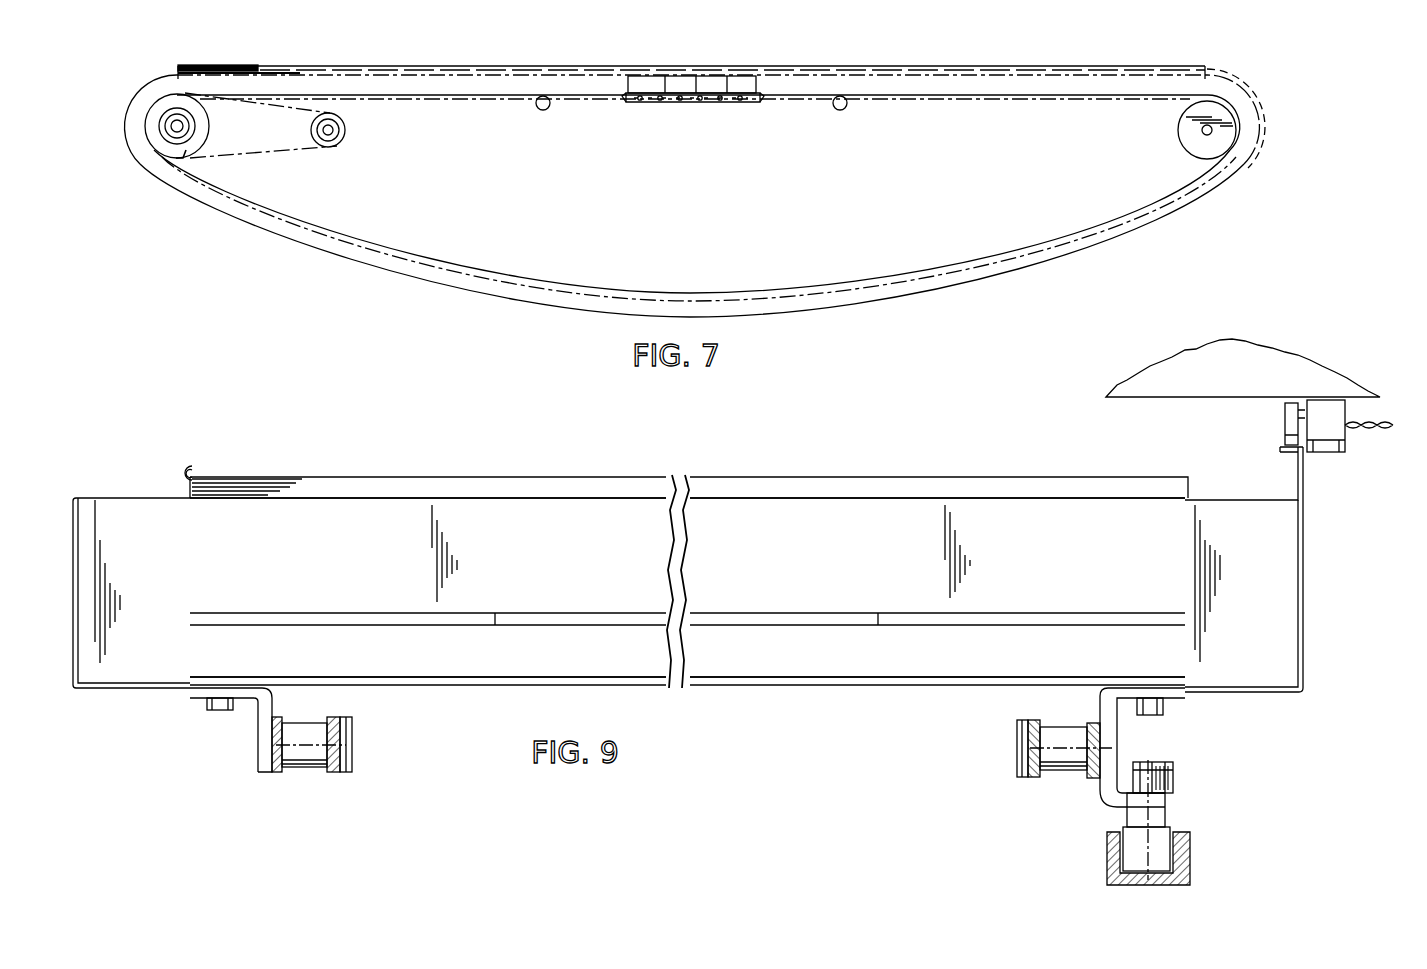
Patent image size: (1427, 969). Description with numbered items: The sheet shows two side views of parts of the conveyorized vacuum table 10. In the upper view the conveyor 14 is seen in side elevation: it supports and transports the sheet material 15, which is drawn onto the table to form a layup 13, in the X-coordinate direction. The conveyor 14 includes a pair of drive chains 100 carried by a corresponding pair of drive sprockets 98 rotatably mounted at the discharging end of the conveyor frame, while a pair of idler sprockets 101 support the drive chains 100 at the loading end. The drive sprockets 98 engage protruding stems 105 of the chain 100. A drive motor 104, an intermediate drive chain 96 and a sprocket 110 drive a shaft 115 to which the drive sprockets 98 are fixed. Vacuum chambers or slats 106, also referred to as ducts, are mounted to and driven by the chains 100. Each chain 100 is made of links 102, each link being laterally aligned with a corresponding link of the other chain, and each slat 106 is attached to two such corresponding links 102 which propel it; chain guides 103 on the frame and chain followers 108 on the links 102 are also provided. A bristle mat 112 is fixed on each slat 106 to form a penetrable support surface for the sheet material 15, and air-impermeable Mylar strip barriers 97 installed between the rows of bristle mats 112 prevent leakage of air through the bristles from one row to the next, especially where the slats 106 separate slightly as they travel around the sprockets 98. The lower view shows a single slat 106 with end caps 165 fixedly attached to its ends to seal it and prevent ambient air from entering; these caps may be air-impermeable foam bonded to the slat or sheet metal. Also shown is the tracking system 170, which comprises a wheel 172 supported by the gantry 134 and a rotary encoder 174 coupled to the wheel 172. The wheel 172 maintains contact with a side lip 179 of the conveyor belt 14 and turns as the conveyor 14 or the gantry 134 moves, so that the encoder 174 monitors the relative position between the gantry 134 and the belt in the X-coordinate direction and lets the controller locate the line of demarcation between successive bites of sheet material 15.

In FIG. 7, the conveyorized vacuum table 10 is at (360, 268).
In FIG. 9, the layup 13 is at (602, 466).
In FIG. 7, the conveyor 14 is at (486, 67).
In FIG. 7, the sheet material 15 is at (588, 68).
In FIG. 9, the sheet material 15 is at (686, 471).
In FIG. 7, the intermediate drive chain 96 is at (268, 148).
In FIG. 9, the Mylar strip barrier 97 is at (1070, 528).
In FIG. 7, the drive sprocket 98 is at (173, 110).
In FIG. 7, the drive chain 100 is at (1010, 95).
In FIG. 7, the idler sprocket 101 is at (1178, 128).
In FIG. 7, the link 102 is at (738, 101).
In FIG. 9, the link 102 is at (258, 750).
In FIG. 9, the chain guide 103 is at (1192, 843).
In FIG. 7, the drive motor 104 is at (338, 140).
In FIG. 9, the protruding stem 105 is at (305, 775).
In FIG. 7, the slat 106 is at (751, 72).
In FIG. 9, the slat 106 is at (800, 664).
In FIG. 9, the chain follower 108 is at (1132, 846).
In FIG. 7, the sprocket 110 is at (197, 143).
In FIG. 7, the bristle mat 112 is at (690, 75).
In FIG. 9, the bristle mat 112 is at (842, 525).
In FIG. 7, the shaft 115 is at (176, 126).
In FIG. 9, the gantry 134 is at (1290, 362).
In FIG. 9, the end cap 165 is at (122, 518).
In FIG. 9, the tracking system 170 is at (1260, 399).
In FIG. 9, the wheel 172 is at (1283, 435).
In FIG. 9, the rotary encoder 174 is at (1337, 437).
In FIG. 9, the side lip 179 is at (1284, 453).